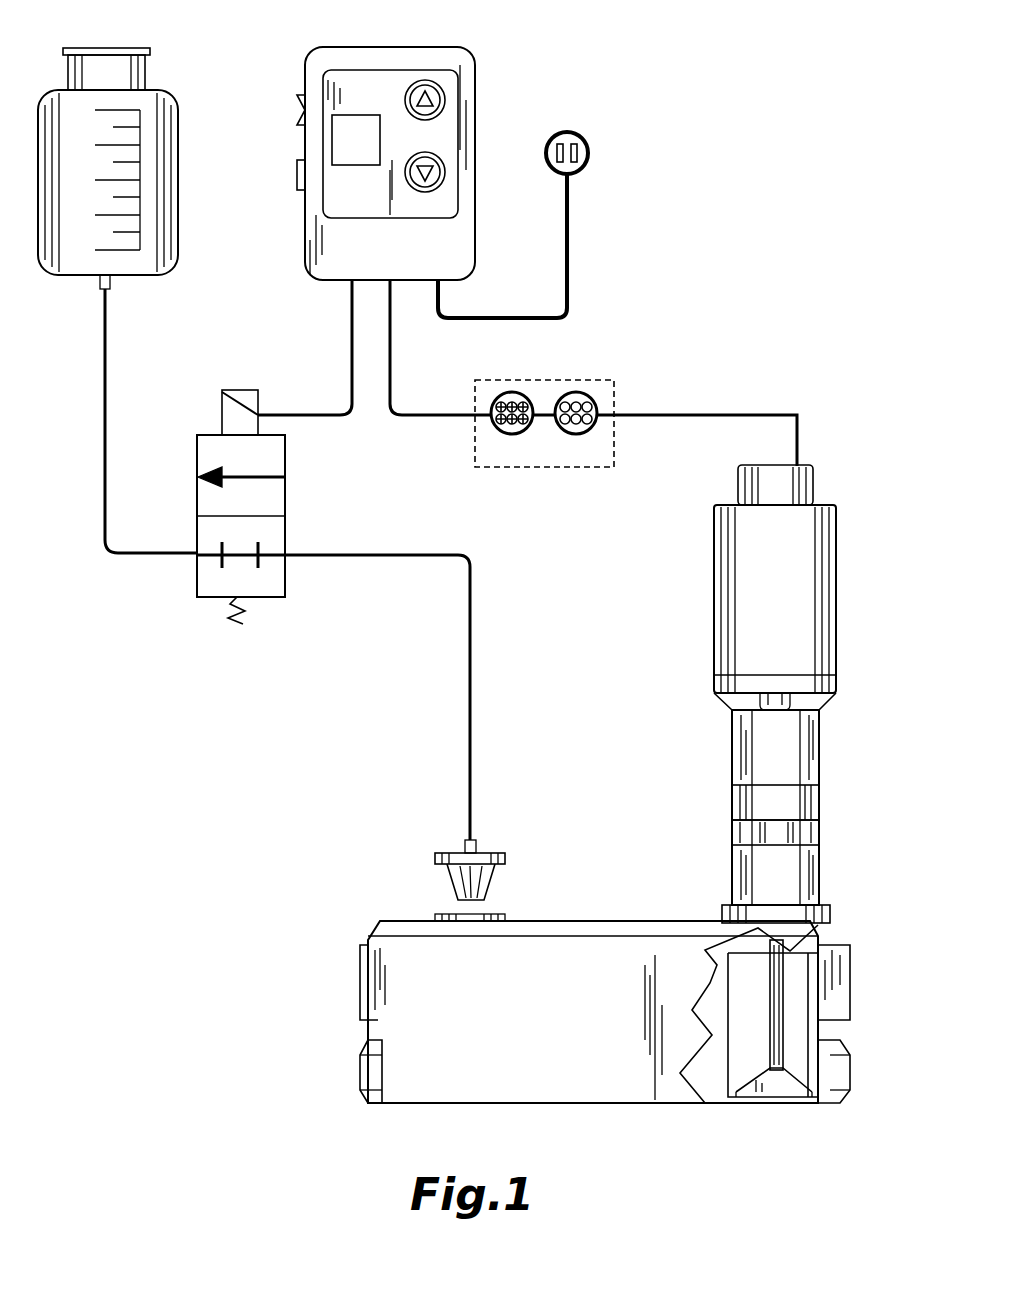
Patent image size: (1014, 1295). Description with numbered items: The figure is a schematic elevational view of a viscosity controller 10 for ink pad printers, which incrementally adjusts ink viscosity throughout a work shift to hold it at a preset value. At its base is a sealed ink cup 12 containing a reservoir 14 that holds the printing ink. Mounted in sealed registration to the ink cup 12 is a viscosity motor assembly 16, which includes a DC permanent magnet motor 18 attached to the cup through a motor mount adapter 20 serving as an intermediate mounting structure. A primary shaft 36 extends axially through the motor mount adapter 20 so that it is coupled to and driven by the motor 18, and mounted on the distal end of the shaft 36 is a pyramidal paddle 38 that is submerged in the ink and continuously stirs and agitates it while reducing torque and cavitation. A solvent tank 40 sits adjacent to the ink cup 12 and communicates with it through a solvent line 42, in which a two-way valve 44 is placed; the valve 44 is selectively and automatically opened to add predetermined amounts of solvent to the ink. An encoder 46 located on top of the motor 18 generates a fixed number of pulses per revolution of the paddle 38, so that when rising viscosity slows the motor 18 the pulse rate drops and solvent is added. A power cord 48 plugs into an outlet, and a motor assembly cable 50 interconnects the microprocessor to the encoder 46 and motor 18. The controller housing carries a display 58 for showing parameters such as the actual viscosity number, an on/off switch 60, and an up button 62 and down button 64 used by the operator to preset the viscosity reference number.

The viscosity controller 10 is at (404, 596).
The sealed ink cup 12 is at (370, 976).
The reservoir 14 is at (730, 1050).
The viscosity motor assembly 16 is at (705, 736).
The DC permanent magnet motor 18 is at (712, 636).
The motor mount adapter 20 is at (822, 805).
The primary shaft 36 is at (775, 1018).
The paddle 38 is at (785, 1090).
The solvent tank 40 is at (175, 192).
The solvent line 42 is at (118, 548).
The valve 44 is at (287, 496).
The encoder 46 is at (803, 482).
The power cord 48 is at (570, 252).
The motor assembly cable 50 is at (805, 414).
The viscosity controller display 58 is at (352, 116).
The on/off switch 60 is at (298, 105).
The up button 62 is at (447, 95).
The down button 64 is at (450, 172).